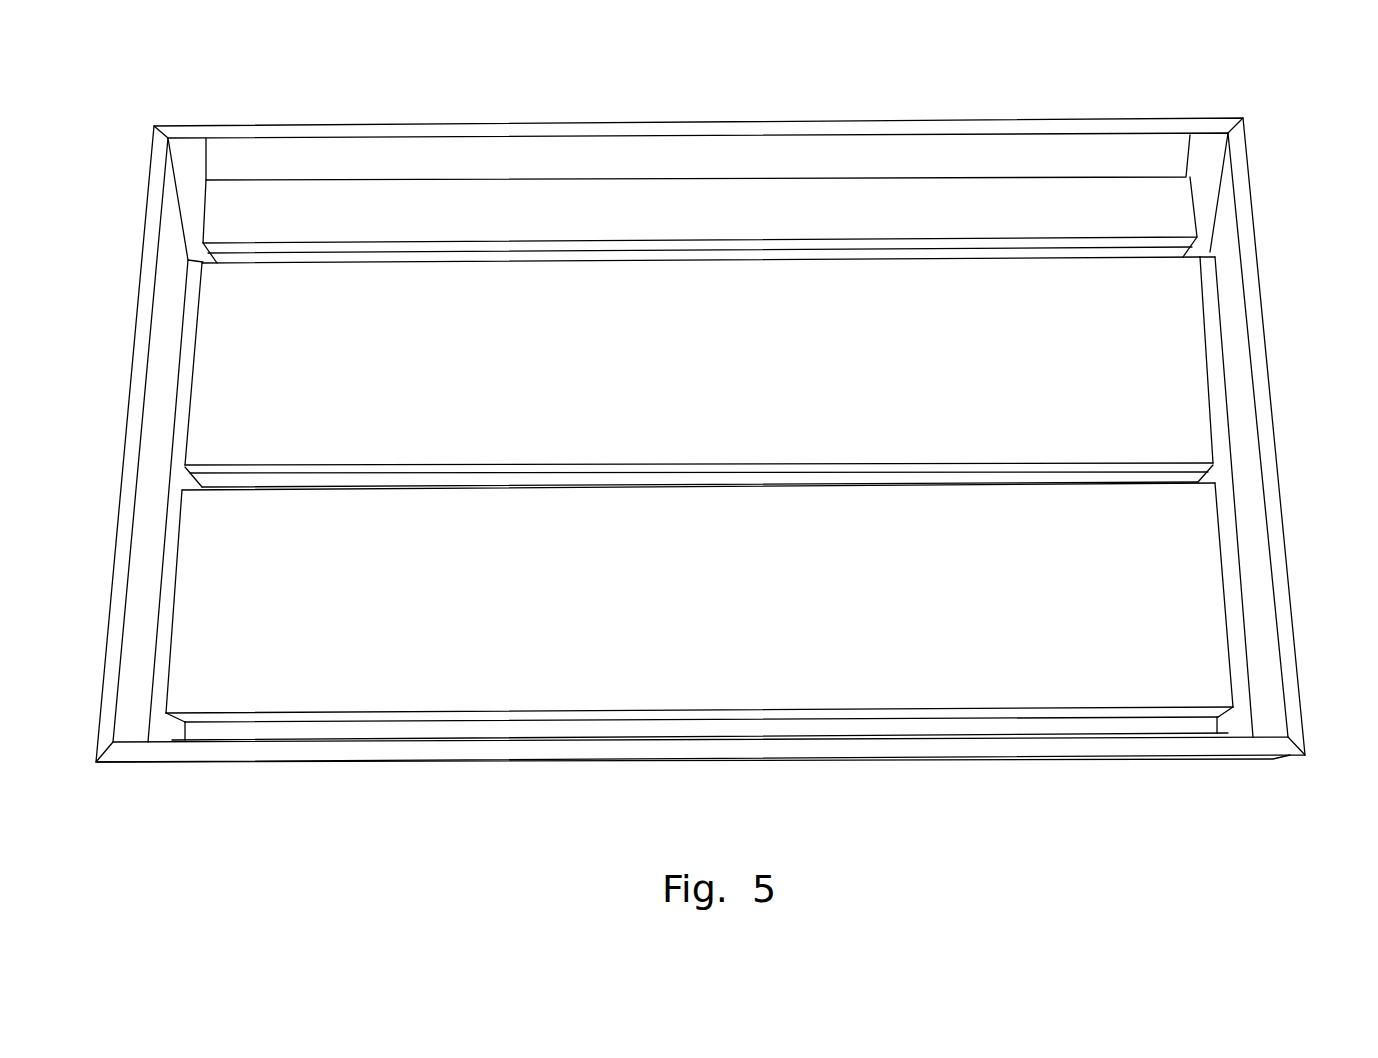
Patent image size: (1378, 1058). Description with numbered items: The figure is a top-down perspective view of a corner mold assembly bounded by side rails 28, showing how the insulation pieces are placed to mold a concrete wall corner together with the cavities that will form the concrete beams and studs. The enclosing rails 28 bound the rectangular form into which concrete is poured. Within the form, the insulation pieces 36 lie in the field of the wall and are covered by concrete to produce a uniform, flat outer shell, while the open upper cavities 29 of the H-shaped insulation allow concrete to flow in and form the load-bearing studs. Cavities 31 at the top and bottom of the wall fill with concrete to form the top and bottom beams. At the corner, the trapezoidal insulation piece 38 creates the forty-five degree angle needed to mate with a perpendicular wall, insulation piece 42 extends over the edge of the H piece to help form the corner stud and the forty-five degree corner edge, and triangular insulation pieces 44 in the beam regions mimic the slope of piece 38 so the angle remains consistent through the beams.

The rail 28 is at (1020, 118).
The open upper cavity 29 is at (1197, 250).
The cavity 31 is at (137, 706).
The insulation piece 36 is at (698, 393).
The trapezoid insulation piece 38 is at (552, 153).
The insulation piece 42 is at (205, 213).
The triangular insulation piece 44 is at (188, 150).